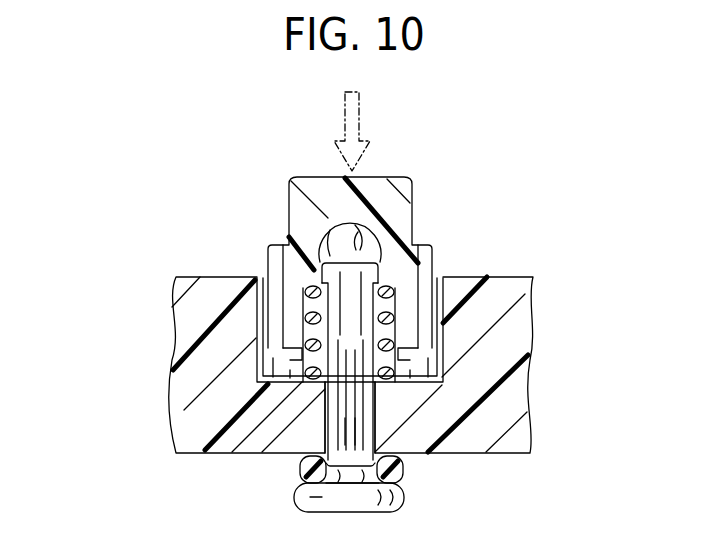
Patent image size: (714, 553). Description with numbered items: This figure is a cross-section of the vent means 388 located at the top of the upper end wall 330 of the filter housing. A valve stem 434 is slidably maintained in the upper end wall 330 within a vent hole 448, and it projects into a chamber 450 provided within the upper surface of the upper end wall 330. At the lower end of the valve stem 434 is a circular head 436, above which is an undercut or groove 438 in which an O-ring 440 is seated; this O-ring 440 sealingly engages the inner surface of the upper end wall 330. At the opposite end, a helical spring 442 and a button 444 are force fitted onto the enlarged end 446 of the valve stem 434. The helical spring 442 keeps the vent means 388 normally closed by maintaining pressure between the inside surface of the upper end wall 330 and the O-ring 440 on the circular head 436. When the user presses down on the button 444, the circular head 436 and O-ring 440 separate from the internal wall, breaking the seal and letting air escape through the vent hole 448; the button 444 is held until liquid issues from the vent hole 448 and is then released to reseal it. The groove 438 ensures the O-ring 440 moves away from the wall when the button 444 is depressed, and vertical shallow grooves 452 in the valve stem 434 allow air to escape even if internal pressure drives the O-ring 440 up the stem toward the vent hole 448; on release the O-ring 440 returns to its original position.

The vent means 388 is at (247, 209).
The button 444 is at (403, 176).
The enlarged end 446 is at (372, 215).
The valve stem 434 is at (350, 310).
The helical spring 442 is at (305, 318).
The chamber 450 is at (428, 366).
The vent hole 448 is at (300, 416).
The upper end wall 330 is at (197, 421).
The vertical shallow grooves 452 is at (220, 455).
The O-ring 440 is at (405, 467).
The circular head 436 is at (298, 503).
The groove 438 is at (353, 476).